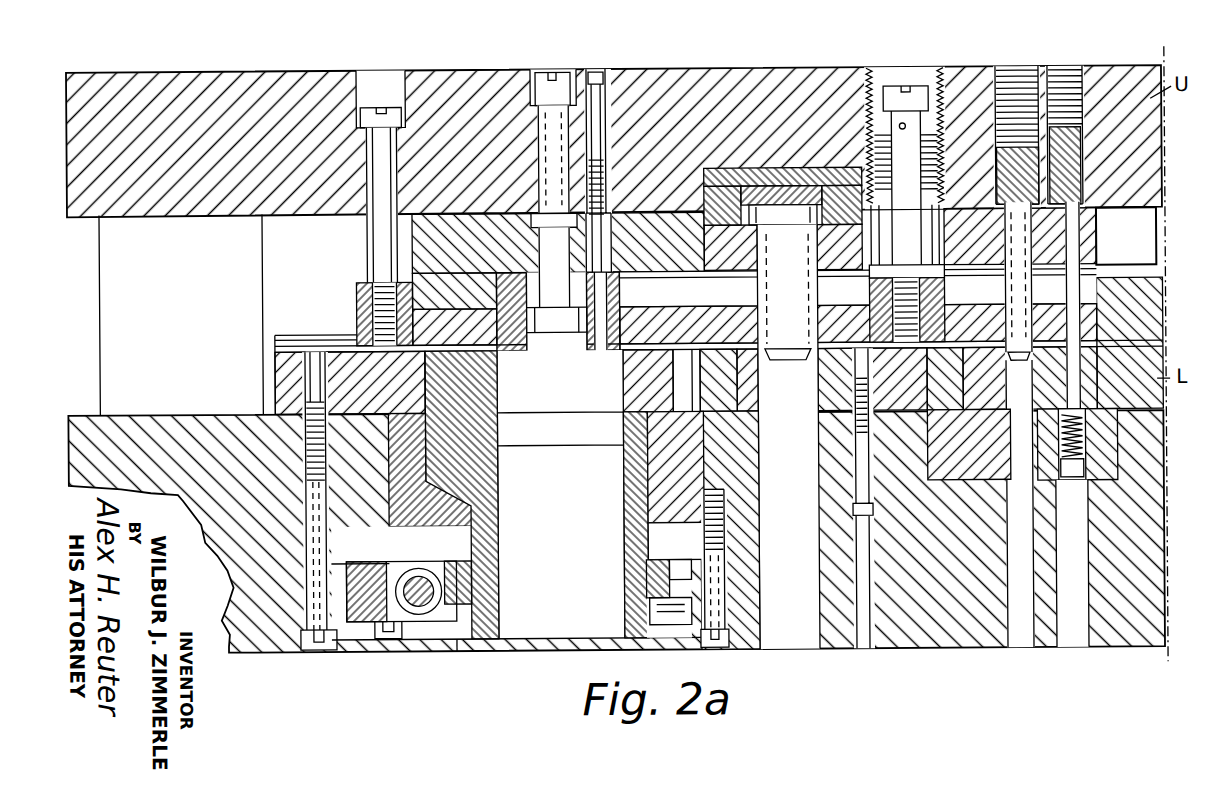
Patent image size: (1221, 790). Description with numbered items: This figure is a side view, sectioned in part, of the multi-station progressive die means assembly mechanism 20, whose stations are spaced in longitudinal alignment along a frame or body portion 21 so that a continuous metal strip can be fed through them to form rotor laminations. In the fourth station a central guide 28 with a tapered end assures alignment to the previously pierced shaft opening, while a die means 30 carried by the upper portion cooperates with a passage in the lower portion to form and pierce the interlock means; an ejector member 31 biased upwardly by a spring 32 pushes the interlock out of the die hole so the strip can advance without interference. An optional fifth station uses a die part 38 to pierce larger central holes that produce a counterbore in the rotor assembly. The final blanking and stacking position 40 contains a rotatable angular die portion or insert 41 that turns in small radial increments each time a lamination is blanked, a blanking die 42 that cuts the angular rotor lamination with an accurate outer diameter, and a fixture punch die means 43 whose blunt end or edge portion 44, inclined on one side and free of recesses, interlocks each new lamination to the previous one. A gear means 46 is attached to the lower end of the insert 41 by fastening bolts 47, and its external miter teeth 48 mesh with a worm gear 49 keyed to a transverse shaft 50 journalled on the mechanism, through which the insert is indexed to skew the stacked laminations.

The multi-station progressive die means assembly mechanism 20 is at (238, 76).
The frame or body portion 21 is at (85, 411).
The central guide 28 is at (1015, 243).
The die means 30 is at (1128, 256).
The ejector member 31 is at (1075, 362).
The spring 32 is at (1080, 438).
The die part 38 is at (778, 323).
The blanking and stacking position 40 is at (484, 641).
The rotatable angular die portion or insert 41 is at (472, 641).
The blanking die 42 is at (615, 297).
The fixture punch die means 43 is at (604, 247).
The blunt end or edge portion 44 is at (602, 360).
The gear means 46 is at (468, 586).
The fastening bolts 47 is at (702, 648).
The external miter teeth 48 is at (675, 524).
The worm gear 49 is at (409, 607).
The transverse shaft 50 is at (413, 570).